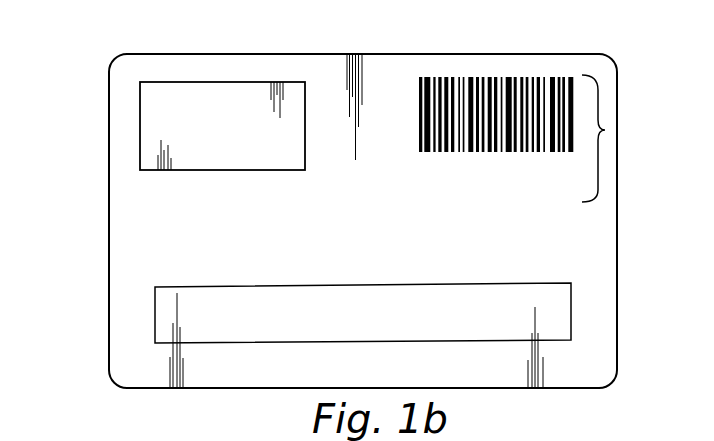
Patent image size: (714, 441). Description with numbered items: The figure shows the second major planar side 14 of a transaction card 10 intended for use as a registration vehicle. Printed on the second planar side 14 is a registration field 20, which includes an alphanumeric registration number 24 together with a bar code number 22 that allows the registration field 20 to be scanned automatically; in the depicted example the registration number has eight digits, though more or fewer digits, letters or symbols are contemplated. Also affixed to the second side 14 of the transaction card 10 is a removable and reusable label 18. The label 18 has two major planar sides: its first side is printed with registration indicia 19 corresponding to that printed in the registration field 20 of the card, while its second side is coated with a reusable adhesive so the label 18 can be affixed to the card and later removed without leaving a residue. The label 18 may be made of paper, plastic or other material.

The transaction card 10 is at (106, 135).
The second major planar side 14 is at (601, 257).
The removable and reusable label 18 is at (198, 79).
The registration indicia 19 is at (235, 117).
The registration field 20 is at (605, 130).
The bar code number 22 is at (509, 76).
The alphanumeric registration number 24 is at (425, 163).